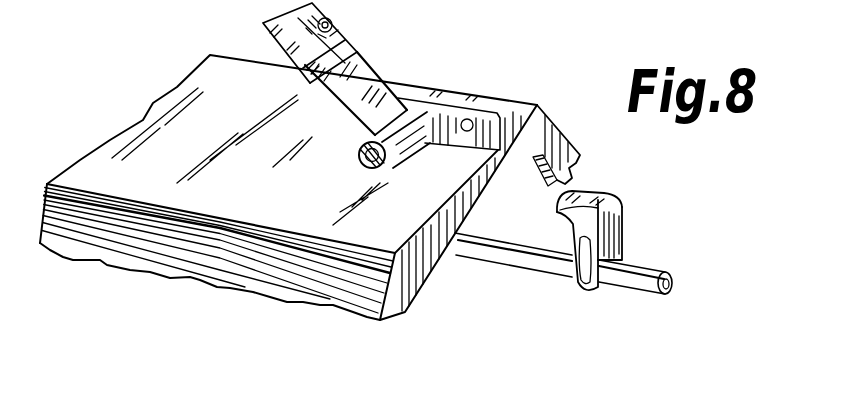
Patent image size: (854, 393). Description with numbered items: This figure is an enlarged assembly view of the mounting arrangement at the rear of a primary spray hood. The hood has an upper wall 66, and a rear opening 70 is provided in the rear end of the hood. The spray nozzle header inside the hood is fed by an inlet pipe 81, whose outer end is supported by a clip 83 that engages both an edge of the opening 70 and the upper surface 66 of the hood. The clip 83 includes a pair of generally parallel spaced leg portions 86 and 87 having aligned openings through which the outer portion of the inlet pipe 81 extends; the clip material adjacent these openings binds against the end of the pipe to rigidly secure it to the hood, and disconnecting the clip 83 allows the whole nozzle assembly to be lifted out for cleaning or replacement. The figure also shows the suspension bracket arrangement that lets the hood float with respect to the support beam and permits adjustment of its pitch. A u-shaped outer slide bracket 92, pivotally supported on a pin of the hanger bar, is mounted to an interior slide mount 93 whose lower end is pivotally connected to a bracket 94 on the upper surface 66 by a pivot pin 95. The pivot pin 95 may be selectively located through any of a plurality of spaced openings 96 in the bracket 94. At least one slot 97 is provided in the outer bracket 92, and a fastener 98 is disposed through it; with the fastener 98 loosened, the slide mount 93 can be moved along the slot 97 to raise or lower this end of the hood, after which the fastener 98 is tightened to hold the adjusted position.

The upper wall 66 is at (143, 121).
The rear opening 70 is at (577, 160).
The inlet pipe 81 is at (523, 260).
The clip 83 is at (592, 190).
The leg portion 86 is at (624, 228).
The leg portion 87 is at (565, 231).
The outer slide bracket 92 is at (260, 27).
The interior slide mount 93 is at (373, 66).
The bracket 94 is at (452, 96).
The pivot pin 95 is at (358, 160).
The spaced opening 96 is at (462, 136).
The slot 97 is at (347, 42).
The fastener 98 is at (300, 68).